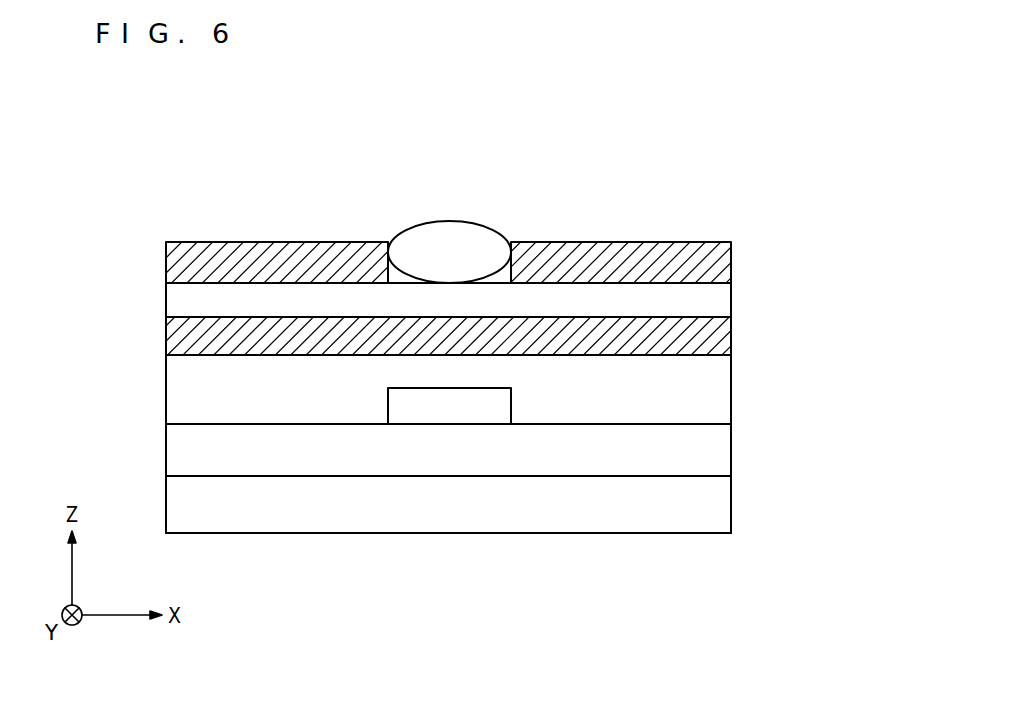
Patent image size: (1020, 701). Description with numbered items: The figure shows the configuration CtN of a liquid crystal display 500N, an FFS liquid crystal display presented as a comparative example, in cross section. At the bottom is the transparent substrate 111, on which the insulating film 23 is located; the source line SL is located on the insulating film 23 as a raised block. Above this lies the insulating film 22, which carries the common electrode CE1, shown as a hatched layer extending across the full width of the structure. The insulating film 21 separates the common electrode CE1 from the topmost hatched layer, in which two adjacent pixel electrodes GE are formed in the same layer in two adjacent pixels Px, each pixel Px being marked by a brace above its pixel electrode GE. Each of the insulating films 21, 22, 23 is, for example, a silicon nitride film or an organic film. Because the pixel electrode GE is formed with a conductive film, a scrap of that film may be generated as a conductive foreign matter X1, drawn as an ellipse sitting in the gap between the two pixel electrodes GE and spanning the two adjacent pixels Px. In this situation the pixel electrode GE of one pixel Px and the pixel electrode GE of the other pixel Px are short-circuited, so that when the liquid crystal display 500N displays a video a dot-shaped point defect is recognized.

The liquid crystal display 500N is at (828, 138).
The pixel electrode GE is at (185, 267).
The conductive foreign matter X1 is at (452, 232).
The pixel Px is at (388, 228).
The insulating film 21 is at (185, 307).
The common electrode CE1 is at (185, 338).
The insulating film 22 is at (185, 393).
The source line SL is at (452, 410).
The insulating film 23 is at (185, 453).
The transparent substrate 111 is at (185, 507).